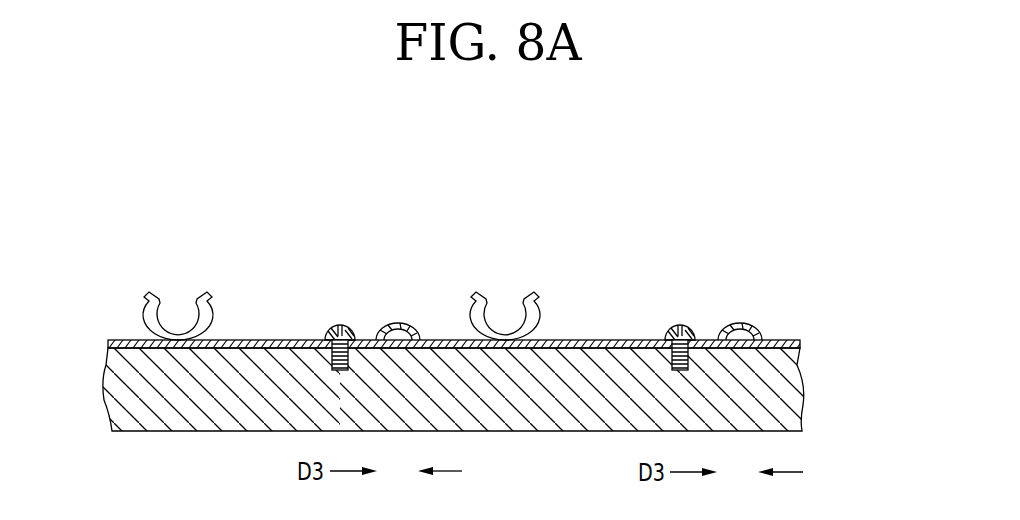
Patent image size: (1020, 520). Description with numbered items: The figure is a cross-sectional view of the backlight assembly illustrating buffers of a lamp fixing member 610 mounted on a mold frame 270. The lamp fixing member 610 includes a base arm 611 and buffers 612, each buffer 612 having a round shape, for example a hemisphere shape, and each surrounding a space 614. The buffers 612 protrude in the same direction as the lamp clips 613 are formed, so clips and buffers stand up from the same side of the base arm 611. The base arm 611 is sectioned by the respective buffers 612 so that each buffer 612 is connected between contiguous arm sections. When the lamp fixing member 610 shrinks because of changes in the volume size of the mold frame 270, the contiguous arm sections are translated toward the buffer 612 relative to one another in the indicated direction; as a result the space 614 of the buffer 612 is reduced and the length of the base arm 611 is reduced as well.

The mold frame 270 is at (790, 395).
The lamp fixing member 610 is at (609, 314).
The base arm 611 is at (284, 340).
The buffer 612 is at (742, 338).
The lamp clip 613 is at (130, 310).
The space 614 is at (763, 340).